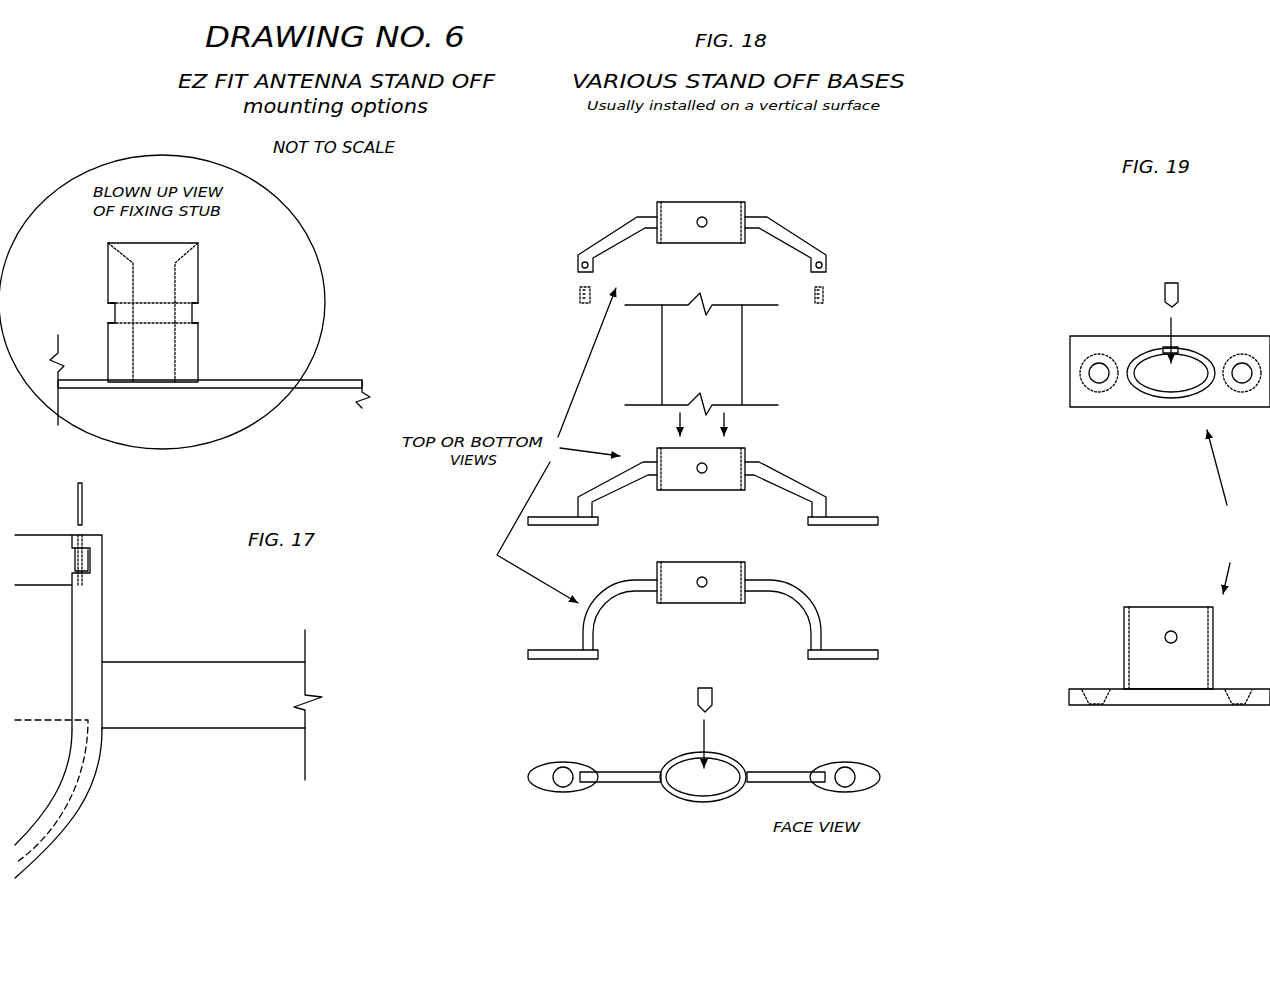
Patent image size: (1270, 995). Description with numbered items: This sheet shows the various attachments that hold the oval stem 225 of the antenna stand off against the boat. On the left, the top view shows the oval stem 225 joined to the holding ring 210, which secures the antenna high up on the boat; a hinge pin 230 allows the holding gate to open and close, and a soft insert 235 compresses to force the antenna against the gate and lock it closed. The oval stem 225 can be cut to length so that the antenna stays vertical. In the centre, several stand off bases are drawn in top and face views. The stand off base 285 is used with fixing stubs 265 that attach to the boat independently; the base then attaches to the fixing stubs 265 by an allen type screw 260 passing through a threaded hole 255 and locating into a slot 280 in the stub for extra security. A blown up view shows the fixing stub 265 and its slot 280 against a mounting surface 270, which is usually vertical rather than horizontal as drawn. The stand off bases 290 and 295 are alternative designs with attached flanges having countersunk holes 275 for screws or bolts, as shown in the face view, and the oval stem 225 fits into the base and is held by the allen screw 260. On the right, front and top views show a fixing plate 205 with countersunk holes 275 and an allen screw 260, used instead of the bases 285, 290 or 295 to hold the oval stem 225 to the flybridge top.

In FIG. 19, the fixing plate 205 is at (1169, 504).
In FIG. 17, the holding ring 210 is at (85, 628).
In FIG. 17, the oval stem 225 is at (212, 705).
In FIG. 18, the oval stem 225 is at (701, 364).
In FIG. 17, the hinge pin 230 is at (89, 519).
In FIG. 17, the soft insert 235 is at (22, 804).
In FIG. 18, the threaded hole 255 is at (570, 253).
In FIG. 18, the allen type screw 260 is at (698, 699).
In FIG. 19, the allen type screw 260 is at (1162, 296).
In FIG. 18, the fixing stub 265 is at (578, 295).
In FIG. 18, the mounting surface 270 is at (408, 365).
In FIG. 18, the countersunk hole 275 is at (843, 779).
In FIG. 19, the countersunk hole 275 is at (1096, 376).
In FIG. 18, the slot 280 is at (107, 314).
In FIG. 18, the stand off base 285 is at (702, 242).
In FIG. 18, the stand off base 290 is at (703, 488).
In FIG. 18, the stand off base 295 is at (703, 610).